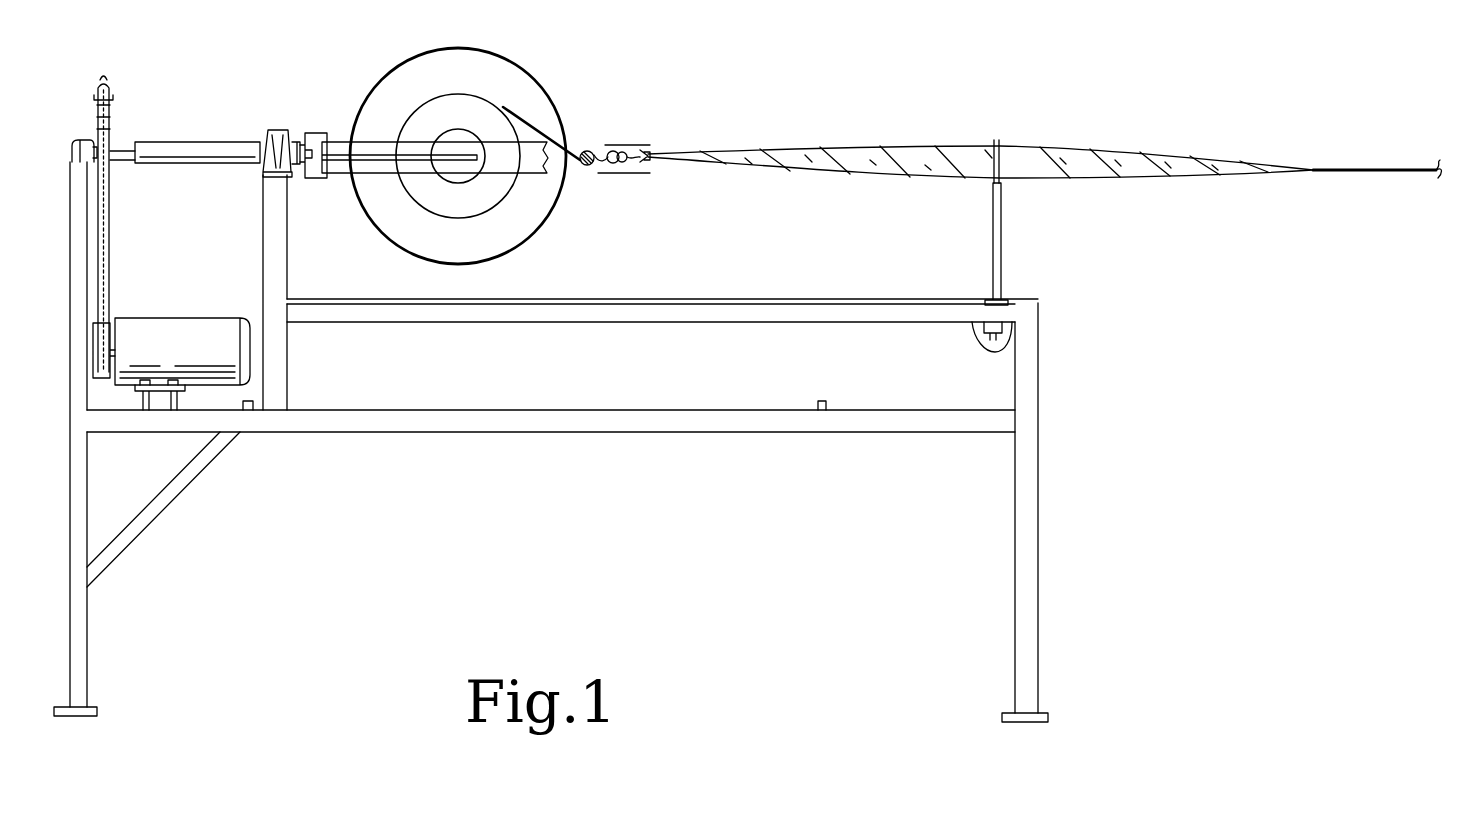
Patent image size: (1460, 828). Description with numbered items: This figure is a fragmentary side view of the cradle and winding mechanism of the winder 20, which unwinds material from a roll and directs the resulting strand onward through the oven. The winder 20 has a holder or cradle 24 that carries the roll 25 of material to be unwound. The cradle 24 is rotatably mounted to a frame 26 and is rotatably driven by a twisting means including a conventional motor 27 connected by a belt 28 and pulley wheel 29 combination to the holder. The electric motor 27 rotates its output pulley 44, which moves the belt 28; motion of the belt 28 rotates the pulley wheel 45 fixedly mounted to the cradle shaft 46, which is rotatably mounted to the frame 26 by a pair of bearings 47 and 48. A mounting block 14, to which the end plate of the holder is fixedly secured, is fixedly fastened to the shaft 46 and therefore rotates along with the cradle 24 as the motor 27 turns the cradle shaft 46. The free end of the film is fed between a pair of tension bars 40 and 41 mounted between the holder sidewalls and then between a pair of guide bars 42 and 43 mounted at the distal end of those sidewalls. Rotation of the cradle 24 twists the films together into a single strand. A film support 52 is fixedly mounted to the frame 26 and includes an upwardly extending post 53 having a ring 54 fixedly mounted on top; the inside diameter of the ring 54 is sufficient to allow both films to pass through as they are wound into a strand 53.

The winder 20 is at (719, 80).
The mounting block 14 is at (323, 133).
The holder or cradle 24 is at (532, 160).
The roll 25 is at (488, 64).
The frame 26 is at (540, 420).
The motor 27 is at (150, 325).
The belt 28 is at (110, 256).
The pulley wheel 29 is at (126, 86).
The tension bar 40 is at (590, 172).
The tension bar 41 is at (618, 148).
The guide bar 42 is at (650, 152).
The guide bar 43 is at (648, 176).
The output pulley 44 is at (96, 372).
The pulley wheel 45 is at (100, 97).
The cradle shaft 46 is at (176, 146).
The bearing 47 is at (76, 142).
The bearing 48 is at (268, 178).
The film support 52 is at (981, 251).
The post 53 is at (1312, 171).
The ring 54 is at (998, 140).